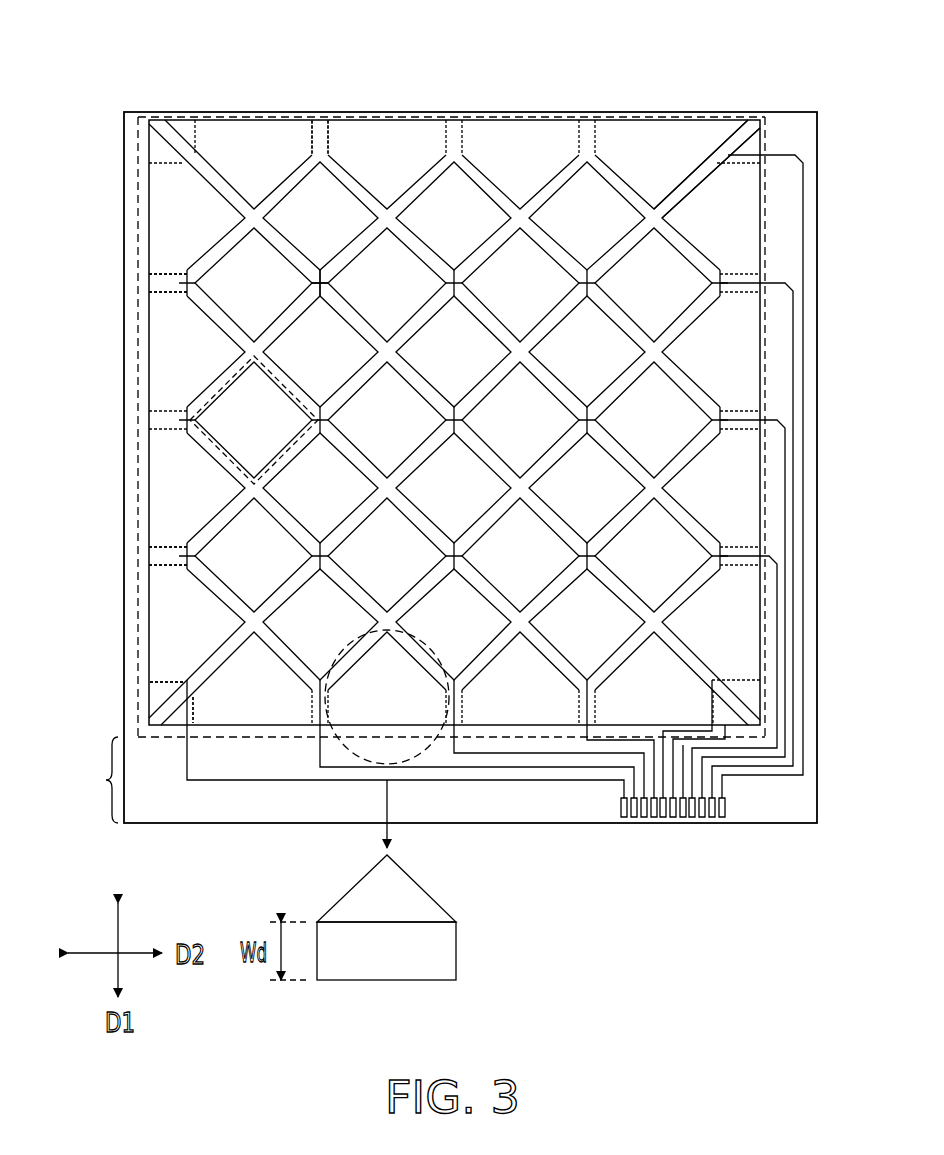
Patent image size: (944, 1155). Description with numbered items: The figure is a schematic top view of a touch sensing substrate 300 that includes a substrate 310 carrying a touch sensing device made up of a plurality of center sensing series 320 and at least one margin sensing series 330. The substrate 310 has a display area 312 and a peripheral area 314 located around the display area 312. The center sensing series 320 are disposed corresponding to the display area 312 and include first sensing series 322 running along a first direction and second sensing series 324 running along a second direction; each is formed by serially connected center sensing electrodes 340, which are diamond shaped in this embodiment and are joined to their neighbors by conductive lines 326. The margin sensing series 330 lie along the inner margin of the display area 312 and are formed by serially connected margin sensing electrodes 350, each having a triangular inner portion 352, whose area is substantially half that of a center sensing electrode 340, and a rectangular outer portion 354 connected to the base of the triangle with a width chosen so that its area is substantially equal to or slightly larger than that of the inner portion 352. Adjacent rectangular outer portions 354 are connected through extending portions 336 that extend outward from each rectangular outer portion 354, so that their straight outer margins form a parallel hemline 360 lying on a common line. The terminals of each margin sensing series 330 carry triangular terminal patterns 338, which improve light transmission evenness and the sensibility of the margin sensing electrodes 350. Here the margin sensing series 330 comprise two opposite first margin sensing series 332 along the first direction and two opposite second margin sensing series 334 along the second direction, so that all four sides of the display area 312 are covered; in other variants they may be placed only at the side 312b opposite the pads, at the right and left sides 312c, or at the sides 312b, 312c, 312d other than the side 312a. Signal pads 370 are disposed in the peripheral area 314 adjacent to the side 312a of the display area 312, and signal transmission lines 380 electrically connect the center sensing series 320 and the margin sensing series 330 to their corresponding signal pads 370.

The touch sensing substrate 300 is at (463, 488).
The substrate 310 is at (766, 824).
The display area 312 is at (463, 447).
The side of the display area 312a is at (535, 748).
The side of the display area 312b is at (555, 111).
The side of the display area 312c is at (134, 505).
The side of the display area 312d is at (769, 360).
The peripheral area 314 is at (93, 780).
The center sensing series 320 is at (285, 60).
The first sensing series 322 is at (319, 156).
The second sensing series 324 is at (194, 283).
The conductive lines 326 is at (323, 280).
The margin sensing series 330 is at (732, 111).
The first margin sensing series 332 is at (708, 176).
The second margin sensing series 334 is at (731, 144).
The extending portions 336 is at (157, 556).
The terminal patterns 338 is at (165, 688).
The center sensing electrodes 340 is at (212, 382).
The margin sensing electrodes 350 is at (470, 917).
The inner portion 352 is at (400, 883).
The rectangular outer portion 354 is at (438, 967).
The parallel hemline 360 is at (146, 470).
The signal pads 370 is at (622, 800).
The signal transmission lines 380 is at (752, 778).